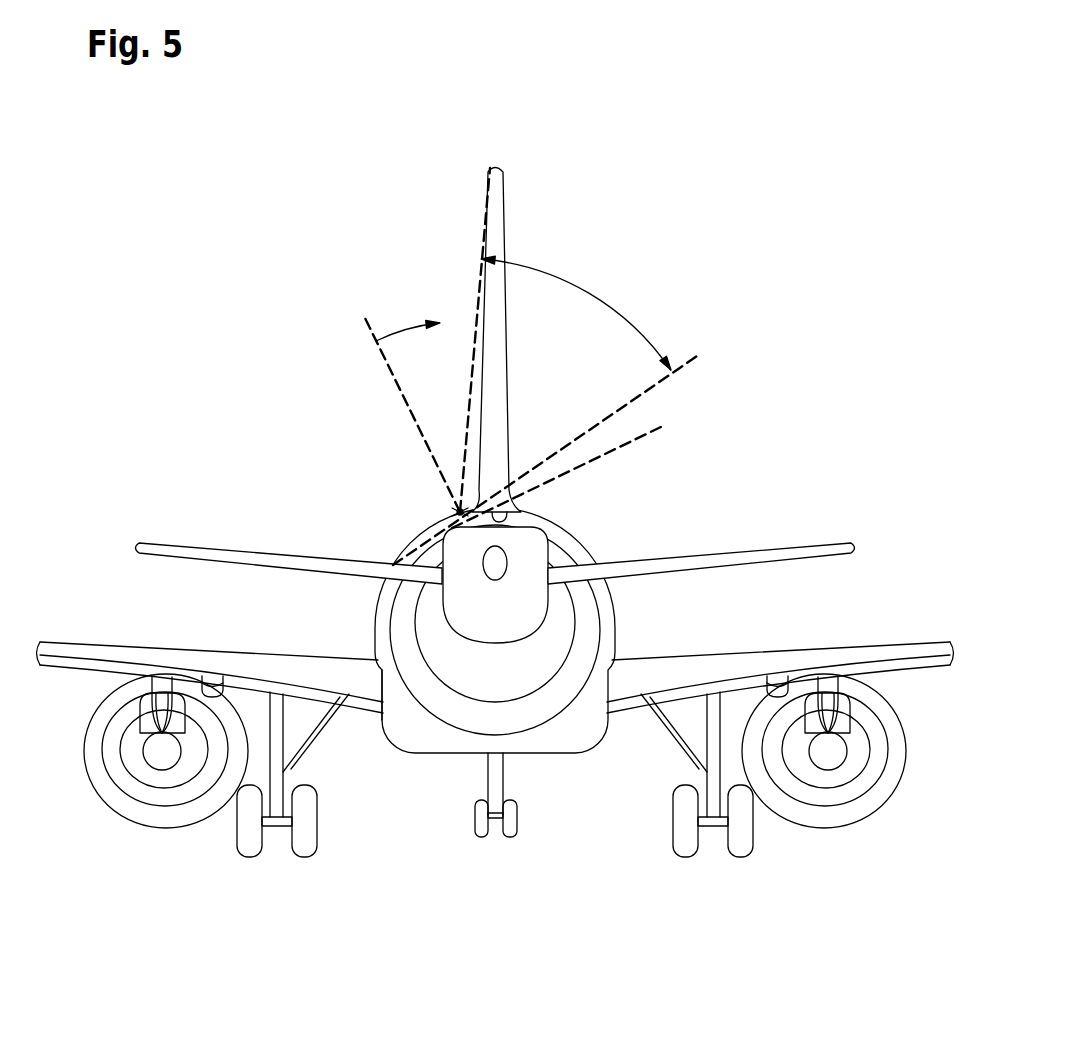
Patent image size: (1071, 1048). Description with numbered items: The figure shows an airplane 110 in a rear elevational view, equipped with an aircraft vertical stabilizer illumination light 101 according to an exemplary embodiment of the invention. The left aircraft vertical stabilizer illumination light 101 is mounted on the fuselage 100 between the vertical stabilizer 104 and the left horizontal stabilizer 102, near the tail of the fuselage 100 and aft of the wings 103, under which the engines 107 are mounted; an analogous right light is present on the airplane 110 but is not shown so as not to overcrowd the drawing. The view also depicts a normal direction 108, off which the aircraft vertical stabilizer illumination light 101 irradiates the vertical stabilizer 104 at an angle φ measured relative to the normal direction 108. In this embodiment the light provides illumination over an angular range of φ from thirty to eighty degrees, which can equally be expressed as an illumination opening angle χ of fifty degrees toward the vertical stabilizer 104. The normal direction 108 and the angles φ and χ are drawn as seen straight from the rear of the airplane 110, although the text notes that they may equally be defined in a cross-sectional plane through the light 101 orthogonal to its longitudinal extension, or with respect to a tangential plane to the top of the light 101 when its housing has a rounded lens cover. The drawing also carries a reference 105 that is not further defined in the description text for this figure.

The fuselage 100 is at (553, 533).
The aircraft vertical stabilizer illumination light 101 is at (458, 511).
The left horizontal stabilizer 102 is at (270, 558).
The wings 103 is at (82, 654).
The vertical stabilizer 104 is at (497, 207).
The fuselage body 105 is at (360, 603).
The engines 107 is at (156, 812).
The normal direction 108 is at (373, 338).
The airplane 110 is at (796, 254).